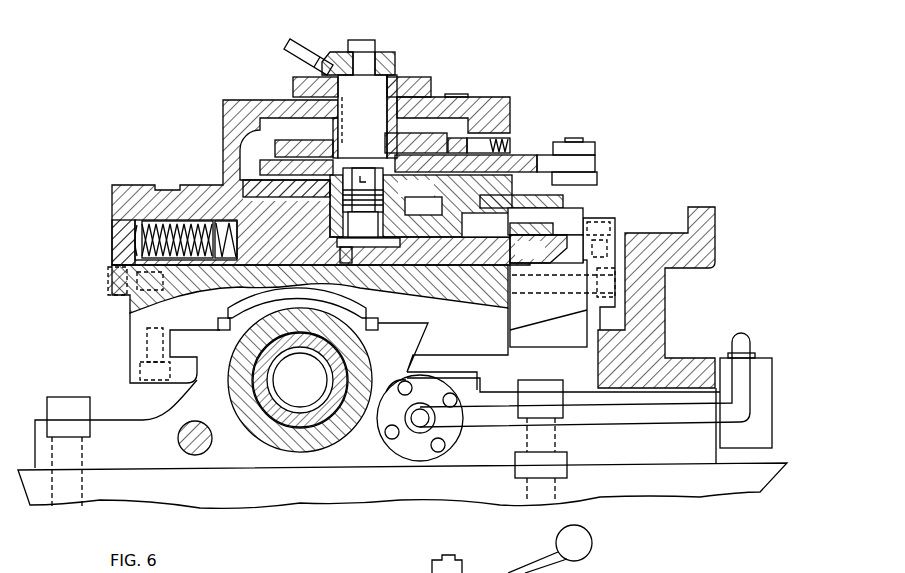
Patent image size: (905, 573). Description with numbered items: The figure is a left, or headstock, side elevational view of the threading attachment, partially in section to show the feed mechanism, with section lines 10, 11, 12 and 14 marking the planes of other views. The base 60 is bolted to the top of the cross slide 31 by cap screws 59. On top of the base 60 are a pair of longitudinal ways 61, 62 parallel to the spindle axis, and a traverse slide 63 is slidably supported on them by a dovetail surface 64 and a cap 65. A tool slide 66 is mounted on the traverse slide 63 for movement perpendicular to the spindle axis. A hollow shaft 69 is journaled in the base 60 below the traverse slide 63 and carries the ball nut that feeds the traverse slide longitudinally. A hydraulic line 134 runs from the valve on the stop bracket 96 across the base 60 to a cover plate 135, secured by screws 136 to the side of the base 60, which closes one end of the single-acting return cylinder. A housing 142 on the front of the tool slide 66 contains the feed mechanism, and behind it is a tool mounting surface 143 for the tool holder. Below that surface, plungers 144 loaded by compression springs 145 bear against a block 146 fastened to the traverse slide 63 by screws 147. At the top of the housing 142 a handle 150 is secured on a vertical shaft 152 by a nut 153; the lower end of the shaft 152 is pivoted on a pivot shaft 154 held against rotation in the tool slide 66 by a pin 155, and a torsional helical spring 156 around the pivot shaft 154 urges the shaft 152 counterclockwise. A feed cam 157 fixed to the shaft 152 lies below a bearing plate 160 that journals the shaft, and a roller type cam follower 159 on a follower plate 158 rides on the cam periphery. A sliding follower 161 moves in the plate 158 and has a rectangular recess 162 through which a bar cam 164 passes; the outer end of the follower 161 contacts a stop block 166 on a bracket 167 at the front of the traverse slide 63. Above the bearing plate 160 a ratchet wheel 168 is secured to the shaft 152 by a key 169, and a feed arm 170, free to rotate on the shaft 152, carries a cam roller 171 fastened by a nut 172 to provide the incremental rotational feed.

The section line 10- 10 is at (217, 123).
The section line 11- 11 is at (218, 162).
The section line 12- 12 is at (93, 222).
The section line 14- 14 is at (362, 32).
The cross slide 31 is at (287, 491).
The cap screws 59 is at (63, 398).
The base 60 is at (142, 458).
The longitudinal way 61 is at (189, 331).
The longitudinal way 62 is at (400, 324).
The traverse slide 63 is at (130, 323).
The dovetail surface 64 is at (424, 331).
The cap 65 is at (185, 365).
The tool slide 66 is at (112, 198).
The hollow shaft 69 is at (300, 380).
The stop bracket 96 is at (713, 257).
The hydraulic line 134 is at (675, 416).
The cover plate 135 is at (402, 453).
The screws 136 is at (445, 447).
The housing 142 is at (483, 97).
The tool mounting surface 143 is at (137, 183).
The plungers 144 is at (183, 222).
The compression springs 145 is at (236, 241).
The block 146 is at (118, 250).
The screws 147 is at (108, 282).
The handle 150 is at (296, 55).
The vertical shaft 152 is at (375, 115).
The nut 153 is at (376, 46).
The pivot shaft 154 is at (377, 235).
The pin 155 is at (335, 246).
The torsional helical spring 156 is at (396, 184).
The feed cam 157 is at (282, 191).
The follower plate 158 is at (560, 193).
The roller type cam follower 159 is at (437, 216).
The bearing plate 160 is at (249, 176).
The sliding follower 161 is at (497, 234).
The rectangular recess 162 is at (515, 240).
The bar cam 164 is at (547, 228).
The stop block 166 is at (609, 219).
The bracket 167 is at (573, 318).
The ratchet wheel 168 is at (311, 141).
The key 169 is at (339, 124).
The feed arm 170 is at (545, 158).
The cam roller 171 is at (598, 176).
The nut 172 is at (588, 146).